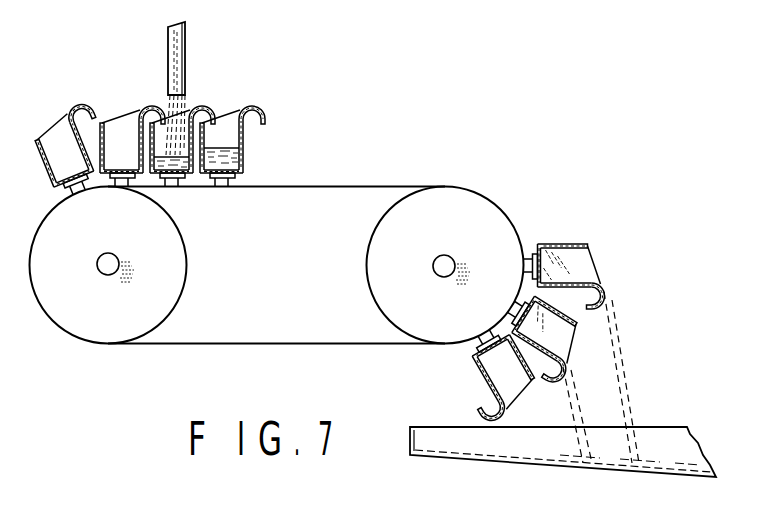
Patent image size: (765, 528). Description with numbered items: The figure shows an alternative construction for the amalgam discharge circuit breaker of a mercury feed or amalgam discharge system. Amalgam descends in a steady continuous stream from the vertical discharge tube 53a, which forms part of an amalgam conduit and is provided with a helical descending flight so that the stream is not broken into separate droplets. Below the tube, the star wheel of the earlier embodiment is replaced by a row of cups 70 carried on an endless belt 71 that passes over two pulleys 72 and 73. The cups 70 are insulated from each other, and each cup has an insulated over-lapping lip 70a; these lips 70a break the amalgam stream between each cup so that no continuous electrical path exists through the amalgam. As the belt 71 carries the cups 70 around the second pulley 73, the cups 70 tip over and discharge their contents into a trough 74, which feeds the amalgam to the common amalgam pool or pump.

The vertical discharge tube 53a is at (168, 55).
The cup 70 is at (242, 157).
The over-lapping lip 70a is at (257, 107).
The endless belt 71 is at (352, 165).
The pulley 72 is at (107, 319).
The pulley 73 is at (417, 317).
The trough 74 is at (650, 443).